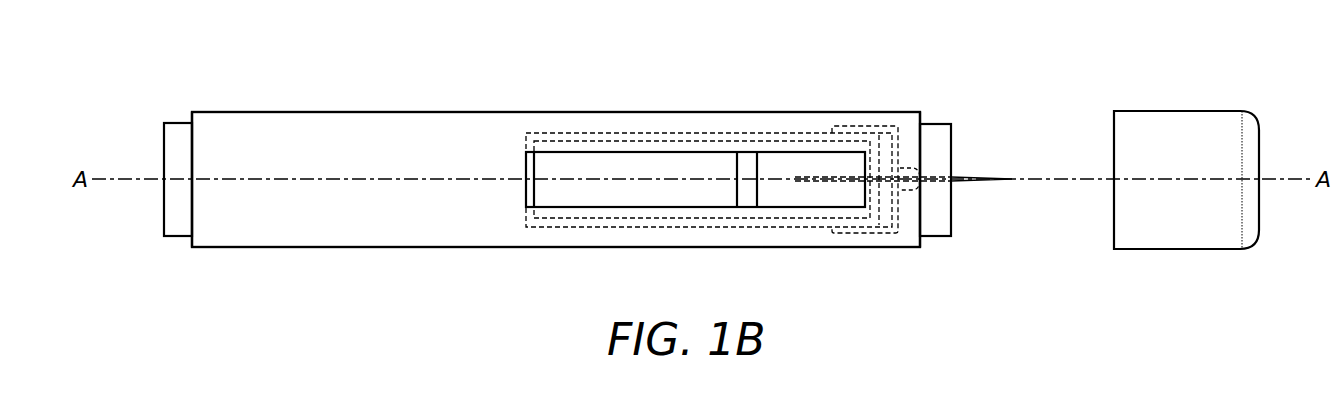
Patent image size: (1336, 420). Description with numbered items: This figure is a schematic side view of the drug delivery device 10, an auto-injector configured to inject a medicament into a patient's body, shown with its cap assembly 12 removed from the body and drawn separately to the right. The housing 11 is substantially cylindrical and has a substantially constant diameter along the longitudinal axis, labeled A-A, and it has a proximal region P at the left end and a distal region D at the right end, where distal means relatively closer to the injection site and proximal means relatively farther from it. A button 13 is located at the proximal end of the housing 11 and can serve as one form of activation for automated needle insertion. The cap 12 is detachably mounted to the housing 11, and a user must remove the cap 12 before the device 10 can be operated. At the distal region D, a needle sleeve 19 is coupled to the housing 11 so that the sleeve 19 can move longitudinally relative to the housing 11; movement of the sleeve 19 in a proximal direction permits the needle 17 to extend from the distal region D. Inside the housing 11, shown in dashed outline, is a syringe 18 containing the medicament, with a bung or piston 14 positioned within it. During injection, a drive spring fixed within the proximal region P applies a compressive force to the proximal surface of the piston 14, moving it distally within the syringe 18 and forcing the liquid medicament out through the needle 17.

The drug delivery device 10 is at (884, 70).
The housing 11 is at (742, 121).
The cap assembly 12 is at (1180, 120).
The button 13 is at (176, 229).
The piston 14 is at (750, 208).
The needle 17 is at (1000, 178).
The syringe 18 is at (592, 232).
The needle sleeve 19 is at (944, 127).
The proximal region P is at (210, 240).
The distal region D is at (906, 240).